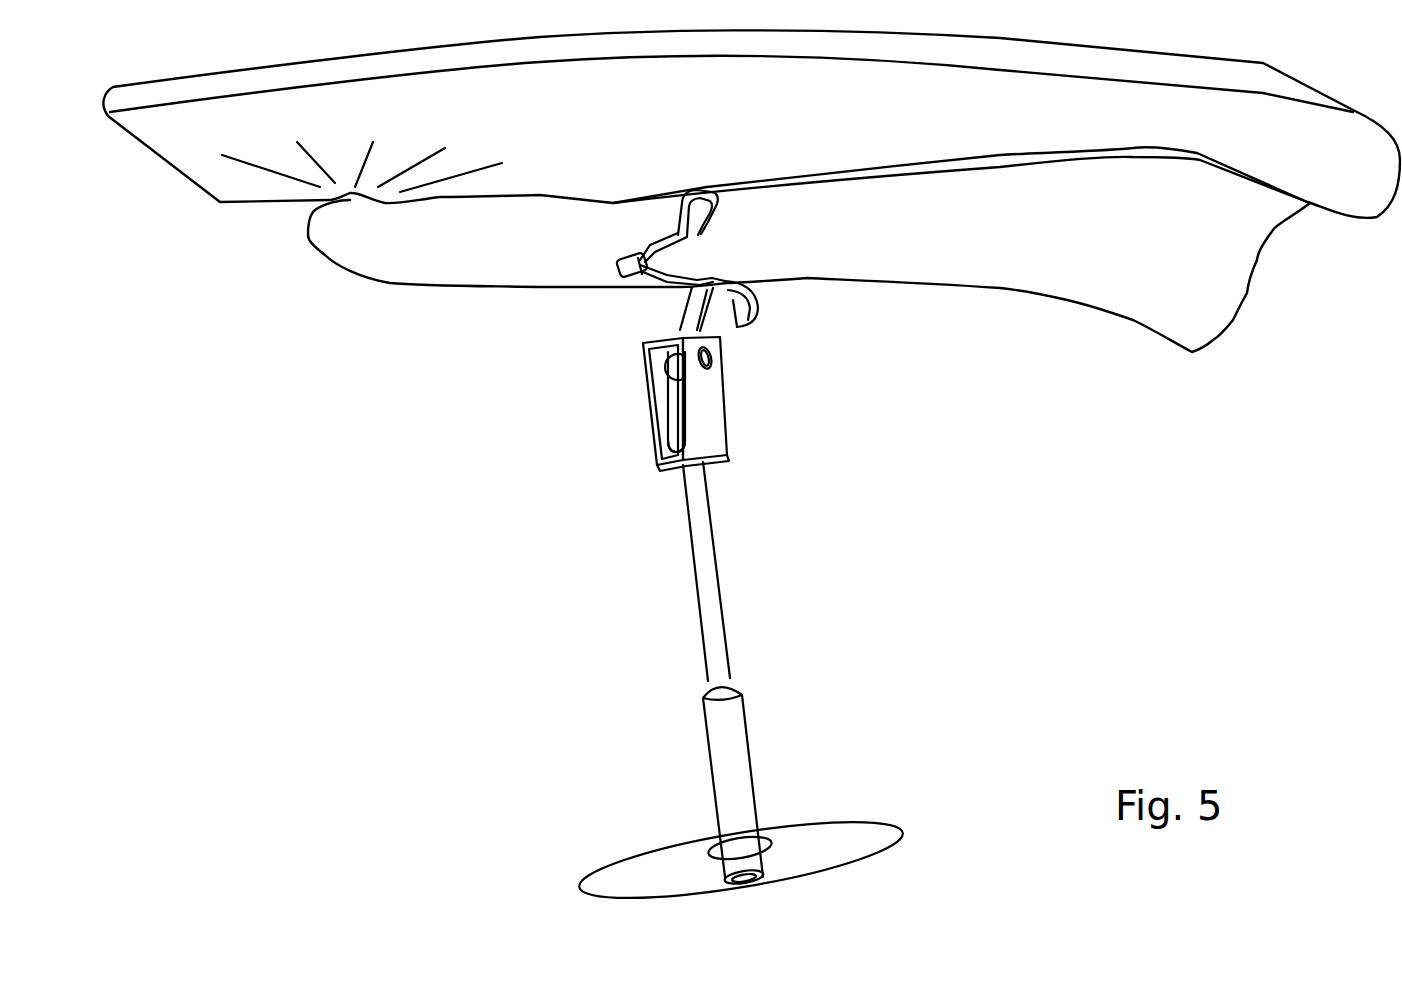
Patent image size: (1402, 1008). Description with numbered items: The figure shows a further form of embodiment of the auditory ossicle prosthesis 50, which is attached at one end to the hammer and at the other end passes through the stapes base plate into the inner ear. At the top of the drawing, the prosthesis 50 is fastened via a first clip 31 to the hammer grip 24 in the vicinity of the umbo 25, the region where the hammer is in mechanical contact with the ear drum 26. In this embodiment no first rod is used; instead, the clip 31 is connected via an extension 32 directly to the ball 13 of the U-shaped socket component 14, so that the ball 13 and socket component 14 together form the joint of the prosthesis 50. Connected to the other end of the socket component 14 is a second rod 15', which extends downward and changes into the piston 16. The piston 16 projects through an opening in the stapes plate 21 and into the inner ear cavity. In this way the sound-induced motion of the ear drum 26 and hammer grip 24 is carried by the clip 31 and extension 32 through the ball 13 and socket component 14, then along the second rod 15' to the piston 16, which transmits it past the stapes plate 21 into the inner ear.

The ball 13 is at (673, 367).
The U-shaped socket component 14 is at (668, 474).
The second rod 15' is at (660, 571).
The piston 16 is at (720, 749).
The stapes plate 21 is at (850, 842).
The hammer grip 24 is at (1220, 280).
The umbo 25 is at (350, 200).
The ear drum 26 is at (190, 144).
The first clip 31 is at (742, 308).
The extension 32 is at (710, 315).
The auditory ossicle prosthesis 50 is at (709, 370).